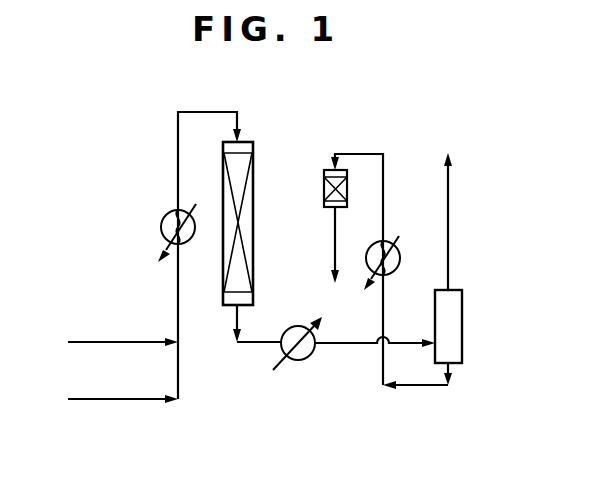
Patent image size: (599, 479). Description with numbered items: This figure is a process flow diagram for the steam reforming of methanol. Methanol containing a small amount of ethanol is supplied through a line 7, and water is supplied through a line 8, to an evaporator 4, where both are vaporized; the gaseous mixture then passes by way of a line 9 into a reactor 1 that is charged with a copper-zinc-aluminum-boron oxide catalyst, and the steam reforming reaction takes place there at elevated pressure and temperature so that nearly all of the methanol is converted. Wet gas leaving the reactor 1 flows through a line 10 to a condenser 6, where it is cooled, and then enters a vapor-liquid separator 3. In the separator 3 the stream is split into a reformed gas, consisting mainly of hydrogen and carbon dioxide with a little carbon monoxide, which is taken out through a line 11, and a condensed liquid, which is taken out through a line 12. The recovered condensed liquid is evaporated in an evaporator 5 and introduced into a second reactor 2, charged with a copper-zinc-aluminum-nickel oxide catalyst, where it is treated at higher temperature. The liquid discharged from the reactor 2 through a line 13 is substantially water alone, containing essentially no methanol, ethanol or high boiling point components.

The reactor 1 is at (253, 233).
The reactor 2 is at (347, 194).
The vapor-liquid separator 3 is at (462, 355).
The evaporator 4 is at (190, 242).
The evaporator 5 is at (400, 262).
The condenser 6 is at (300, 360).
The line 7 is at (120, 342).
The line 8 is at (120, 399).
The feed line to reactor 9 is at (178, 112).
The reactor outlet line 10 is at (352, 343).
The line 11 is at (448, 226).
The line 12 is at (410, 385).
The line 13 is at (334, 265).